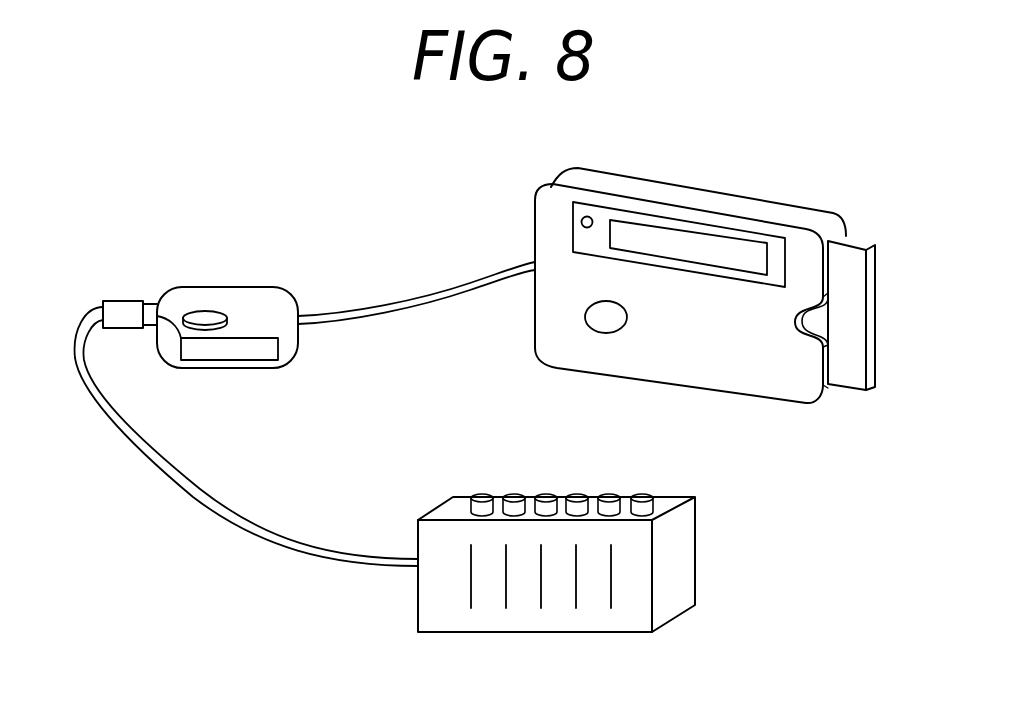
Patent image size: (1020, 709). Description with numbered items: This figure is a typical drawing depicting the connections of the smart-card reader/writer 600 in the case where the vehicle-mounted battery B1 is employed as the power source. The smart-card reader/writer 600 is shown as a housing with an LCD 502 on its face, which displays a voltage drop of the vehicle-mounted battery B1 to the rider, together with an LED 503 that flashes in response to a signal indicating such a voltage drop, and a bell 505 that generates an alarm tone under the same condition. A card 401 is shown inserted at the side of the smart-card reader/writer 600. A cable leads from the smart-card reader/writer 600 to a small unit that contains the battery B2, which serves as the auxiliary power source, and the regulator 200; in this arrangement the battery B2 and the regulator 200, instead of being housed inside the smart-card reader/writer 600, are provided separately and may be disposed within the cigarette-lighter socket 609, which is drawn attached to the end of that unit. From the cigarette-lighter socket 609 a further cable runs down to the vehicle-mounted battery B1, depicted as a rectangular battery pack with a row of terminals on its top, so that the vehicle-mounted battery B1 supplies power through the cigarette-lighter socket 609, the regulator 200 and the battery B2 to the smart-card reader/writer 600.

The smart-card reader/writer 600 is at (553, 196).
The LCD 502 is at (703, 248).
The LED 503 is at (580, 222).
The bell 505 is at (612, 318).
The card 401 is at (850, 267).
The cigarette-lighter socket 609 is at (120, 308).
The regulator 200 is at (203, 353).
The battery B2 is at (207, 313).
The vehicle-mounted battery B1 is at (462, 505).